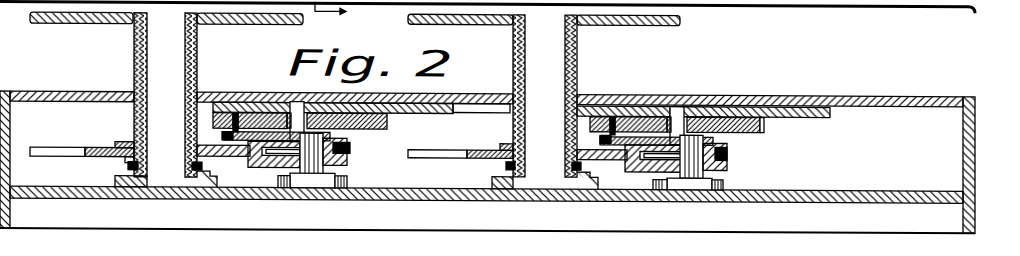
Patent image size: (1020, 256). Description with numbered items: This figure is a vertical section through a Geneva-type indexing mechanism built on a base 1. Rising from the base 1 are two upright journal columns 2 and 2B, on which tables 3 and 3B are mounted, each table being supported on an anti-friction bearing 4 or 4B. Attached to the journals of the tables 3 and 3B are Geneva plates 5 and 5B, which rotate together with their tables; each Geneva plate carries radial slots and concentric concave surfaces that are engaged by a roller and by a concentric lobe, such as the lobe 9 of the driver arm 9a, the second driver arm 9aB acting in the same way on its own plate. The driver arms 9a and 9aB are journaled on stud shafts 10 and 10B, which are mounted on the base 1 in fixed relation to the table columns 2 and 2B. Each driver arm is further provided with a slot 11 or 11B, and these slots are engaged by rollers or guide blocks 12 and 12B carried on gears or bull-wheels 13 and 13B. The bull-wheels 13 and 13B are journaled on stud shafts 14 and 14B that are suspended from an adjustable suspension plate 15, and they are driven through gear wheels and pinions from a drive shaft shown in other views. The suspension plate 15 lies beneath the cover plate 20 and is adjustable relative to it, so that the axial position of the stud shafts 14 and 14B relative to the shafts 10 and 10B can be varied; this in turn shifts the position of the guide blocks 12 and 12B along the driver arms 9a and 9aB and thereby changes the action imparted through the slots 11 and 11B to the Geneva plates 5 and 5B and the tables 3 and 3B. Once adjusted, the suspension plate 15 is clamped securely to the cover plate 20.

The base 1 is at (977, 126).
The journal column 2 is at (149, 58).
The journal column 2B is at (526, 72).
The table 3 is at (100, 24).
The table 3B is at (628, 23).
The anti-friction bearing 4 is at (128, 165).
The anti-friction bearing 4B is at (505, 165).
The Geneva plate 5 is at (97, 147).
The Geneva plate 5B is at (472, 147).
The concentric lobe 9 is at (336, 10).
The driver arm 9a is at (236, 156).
The driver arm 9aB is at (613, 156).
The stud shaft 10 is at (334, 140).
The stud shaft 10B is at (714, 142).
The slot 11 is at (260, 110).
The slot 11B is at (658, 106).
The guide block 12 is at (222, 131).
The guide block 12B is at (600, 133).
The bull-wheel 13 is at (388, 121).
The bull-wheel 13B is at (764, 130).
The stud shaft 14 is at (313, 100).
The stud shaft 14B is at (700, 100).
The suspension plate 15 is at (455, 98).
The cover plate 20 is at (821, 94).